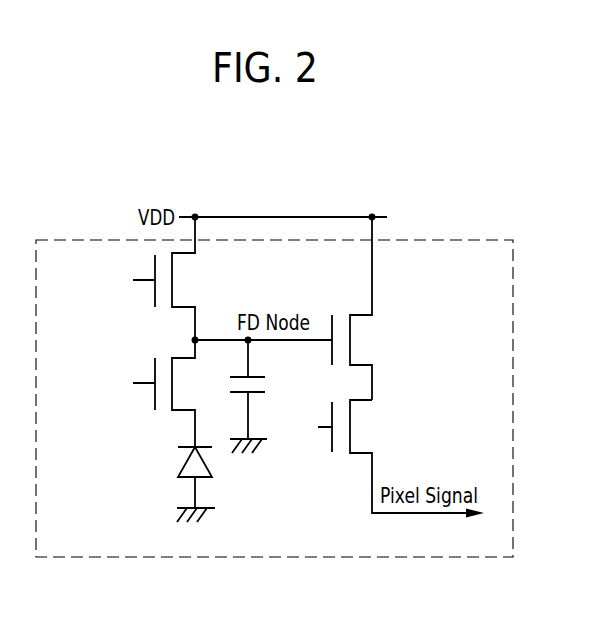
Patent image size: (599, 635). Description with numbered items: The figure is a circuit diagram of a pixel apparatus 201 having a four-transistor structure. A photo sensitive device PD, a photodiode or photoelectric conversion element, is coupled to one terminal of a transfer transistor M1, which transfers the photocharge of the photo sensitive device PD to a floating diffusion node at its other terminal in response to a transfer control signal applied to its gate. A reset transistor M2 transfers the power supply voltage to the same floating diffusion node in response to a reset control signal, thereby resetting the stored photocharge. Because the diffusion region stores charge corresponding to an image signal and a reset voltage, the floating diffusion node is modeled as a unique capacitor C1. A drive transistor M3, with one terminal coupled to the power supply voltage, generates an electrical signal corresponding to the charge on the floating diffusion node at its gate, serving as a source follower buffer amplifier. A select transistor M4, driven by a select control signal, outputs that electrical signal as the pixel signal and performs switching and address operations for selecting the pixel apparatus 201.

The pixel apparatus 201 is at (467, 240).
The transfer transistor M1 is at (161, 393).
The reset transistor M2 is at (161, 278).
The drive transistor M3 is at (361, 308).
The select transistor M4 is at (382, 456).
The unique capacitor of the floating diffusion node C1 is at (260, 396).
The photo sensitive device PD is at (181, 484).